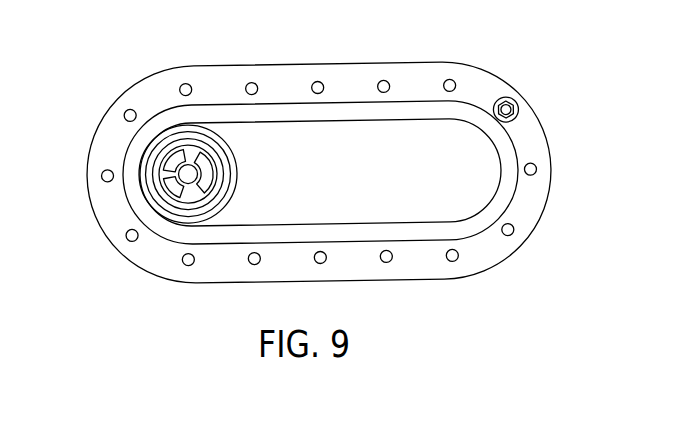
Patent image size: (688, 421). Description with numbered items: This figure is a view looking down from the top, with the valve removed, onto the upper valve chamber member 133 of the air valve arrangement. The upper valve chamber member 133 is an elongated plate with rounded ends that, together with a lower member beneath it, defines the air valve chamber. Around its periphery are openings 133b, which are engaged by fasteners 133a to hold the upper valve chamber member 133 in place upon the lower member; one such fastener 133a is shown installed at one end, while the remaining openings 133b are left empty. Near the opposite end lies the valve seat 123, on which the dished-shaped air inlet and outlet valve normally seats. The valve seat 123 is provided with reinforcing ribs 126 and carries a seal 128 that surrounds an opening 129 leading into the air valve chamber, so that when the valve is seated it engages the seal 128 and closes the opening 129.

The valve seat 123 is at (128, 199).
The reinforcing ribs 126 is at (210, 180).
The seal 128 is at (232, 168).
The opening 129 is at (203, 164).
The upper valve chamber member 133 is at (417, 174).
The fasteners 133a is at (522, 97).
The openings 133b is at (313, 82).